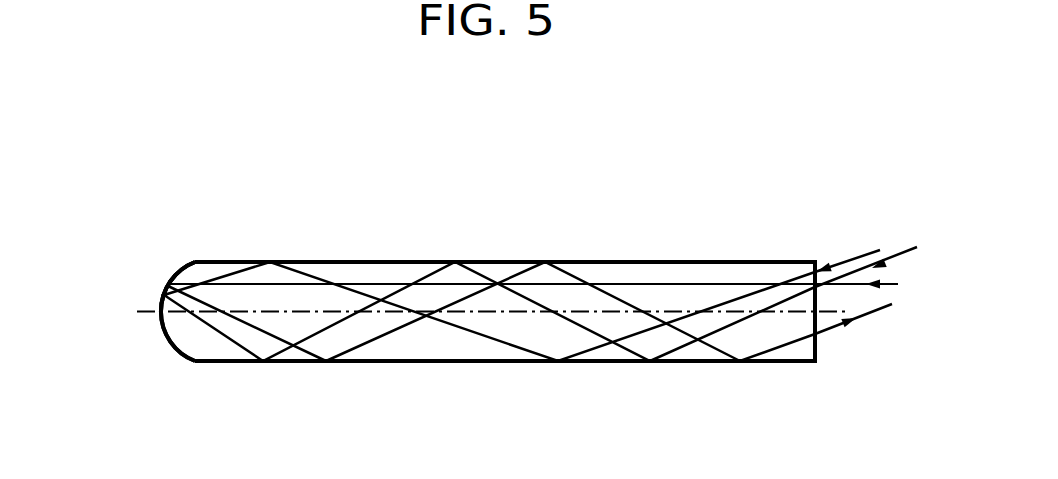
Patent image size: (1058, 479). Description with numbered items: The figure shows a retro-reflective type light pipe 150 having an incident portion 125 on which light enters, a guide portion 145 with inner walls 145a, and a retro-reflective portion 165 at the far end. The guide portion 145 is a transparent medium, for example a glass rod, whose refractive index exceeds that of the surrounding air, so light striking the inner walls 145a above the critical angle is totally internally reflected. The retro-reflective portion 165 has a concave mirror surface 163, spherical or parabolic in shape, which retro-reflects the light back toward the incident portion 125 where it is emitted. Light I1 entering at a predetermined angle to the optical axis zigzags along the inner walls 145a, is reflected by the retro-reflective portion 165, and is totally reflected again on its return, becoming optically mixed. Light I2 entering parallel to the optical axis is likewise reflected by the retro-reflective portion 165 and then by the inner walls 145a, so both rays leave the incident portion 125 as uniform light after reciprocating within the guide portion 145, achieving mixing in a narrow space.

The retro-reflective type light pipe 150 is at (838, 168).
The guide portion 145 is at (725, 235).
The inner walls 145a is at (650, 262).
The concave mirror surface 163 is at (170, 342).
The retro-reflective portion 165 is at (163, 278).
The incident portion 125 is at (815, 351).
The light having a predetermined incident angle I1 is at (552, 294).
The light incident in parallel with the optical axis I2 is at (545, 311).